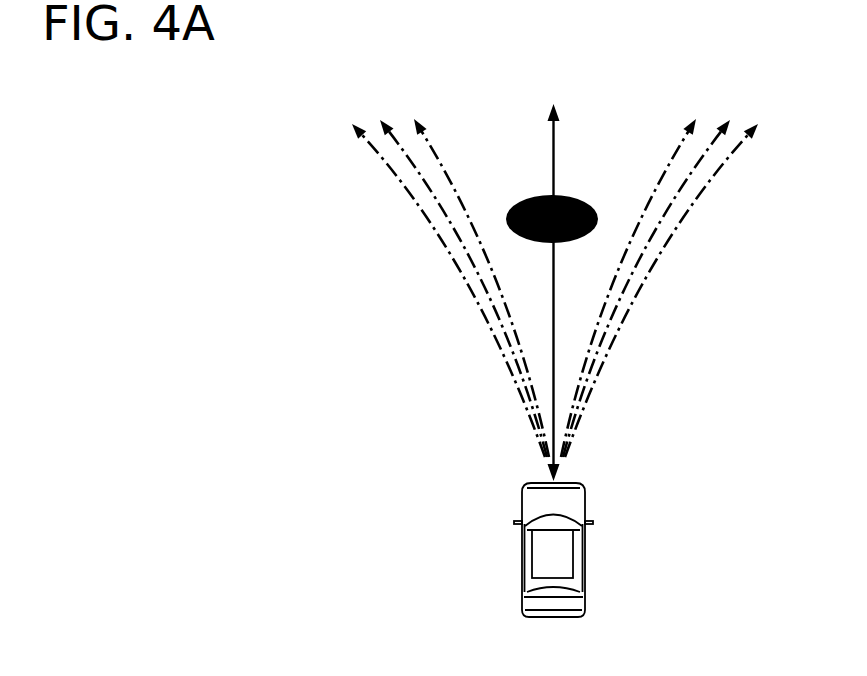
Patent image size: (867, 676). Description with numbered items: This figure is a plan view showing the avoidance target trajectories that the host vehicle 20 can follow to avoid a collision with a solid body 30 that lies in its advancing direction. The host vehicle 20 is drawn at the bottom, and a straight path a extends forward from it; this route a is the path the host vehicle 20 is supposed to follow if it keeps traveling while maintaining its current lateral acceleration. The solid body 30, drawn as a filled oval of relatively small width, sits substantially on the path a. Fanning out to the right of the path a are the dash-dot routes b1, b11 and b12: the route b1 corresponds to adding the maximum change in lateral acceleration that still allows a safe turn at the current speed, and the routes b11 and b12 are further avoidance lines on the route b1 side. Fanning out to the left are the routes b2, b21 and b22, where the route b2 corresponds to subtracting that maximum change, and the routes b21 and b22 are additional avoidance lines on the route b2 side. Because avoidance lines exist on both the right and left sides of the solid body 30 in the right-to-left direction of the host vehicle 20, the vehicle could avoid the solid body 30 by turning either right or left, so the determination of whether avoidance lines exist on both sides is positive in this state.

The host vehicle 20 is at (585, 553).
The solid body 30 is at (535, 195).
The route a is at (553, 280).
The route b1 is at (679, 286).
The route b11 is at (640, 273).
The route b12 is at (665, 273).
The route b2 is at (434, 279).
The route b21 is at (449, 271).
The route b22 is at (473, 275).